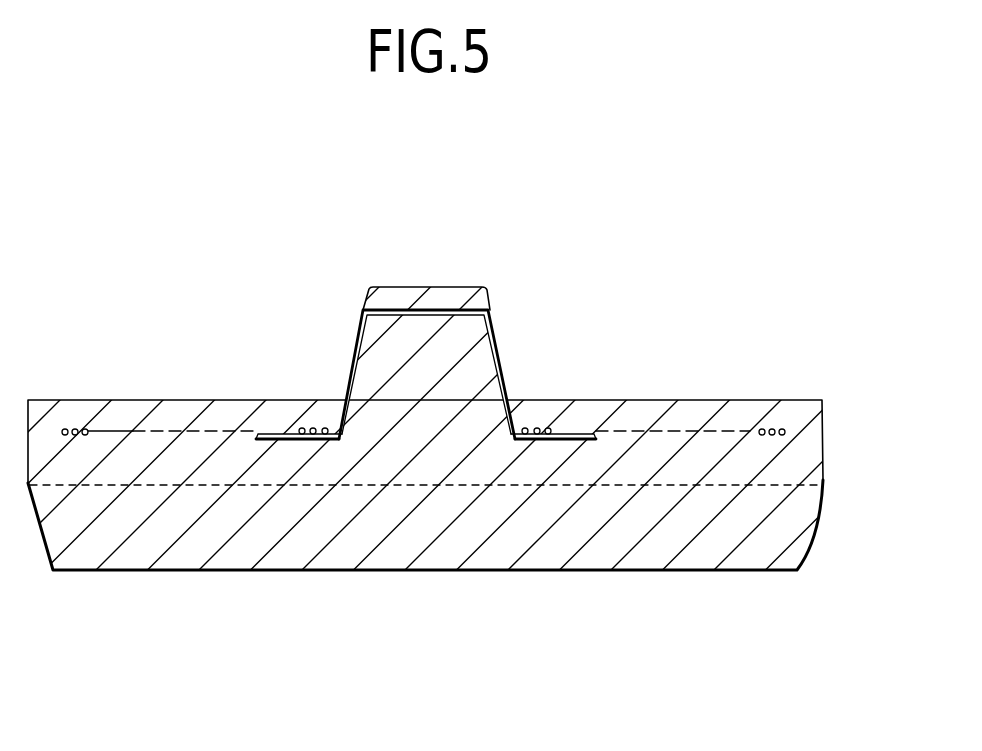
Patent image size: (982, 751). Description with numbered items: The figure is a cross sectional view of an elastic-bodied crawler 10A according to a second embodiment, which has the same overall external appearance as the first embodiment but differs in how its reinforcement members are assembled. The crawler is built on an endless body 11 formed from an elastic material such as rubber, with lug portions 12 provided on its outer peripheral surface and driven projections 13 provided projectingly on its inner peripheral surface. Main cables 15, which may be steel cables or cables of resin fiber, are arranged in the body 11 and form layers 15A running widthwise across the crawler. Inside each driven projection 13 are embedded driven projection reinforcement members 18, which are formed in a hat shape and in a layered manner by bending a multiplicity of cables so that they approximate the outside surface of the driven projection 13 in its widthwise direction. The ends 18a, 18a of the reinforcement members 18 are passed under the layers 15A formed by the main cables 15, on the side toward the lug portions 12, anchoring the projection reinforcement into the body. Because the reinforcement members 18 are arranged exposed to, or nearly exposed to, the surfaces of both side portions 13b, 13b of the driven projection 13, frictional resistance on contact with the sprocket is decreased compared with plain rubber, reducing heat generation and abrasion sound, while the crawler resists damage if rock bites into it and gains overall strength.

The elastic-bodied crawler 10A is at (645, 348).
The body 11 is at (807, 450).
The lug portions 12 is at (797, 517).
The driven projection 13 is at (447, 288).
The side portions 13b is at (362, 313).
The main cables 15 is at (173, 430).
The layers 15A is at (122, 416).
The driven projection reinforcement members 18 is at (350, 352).
The ends 18a is at (270, 436).